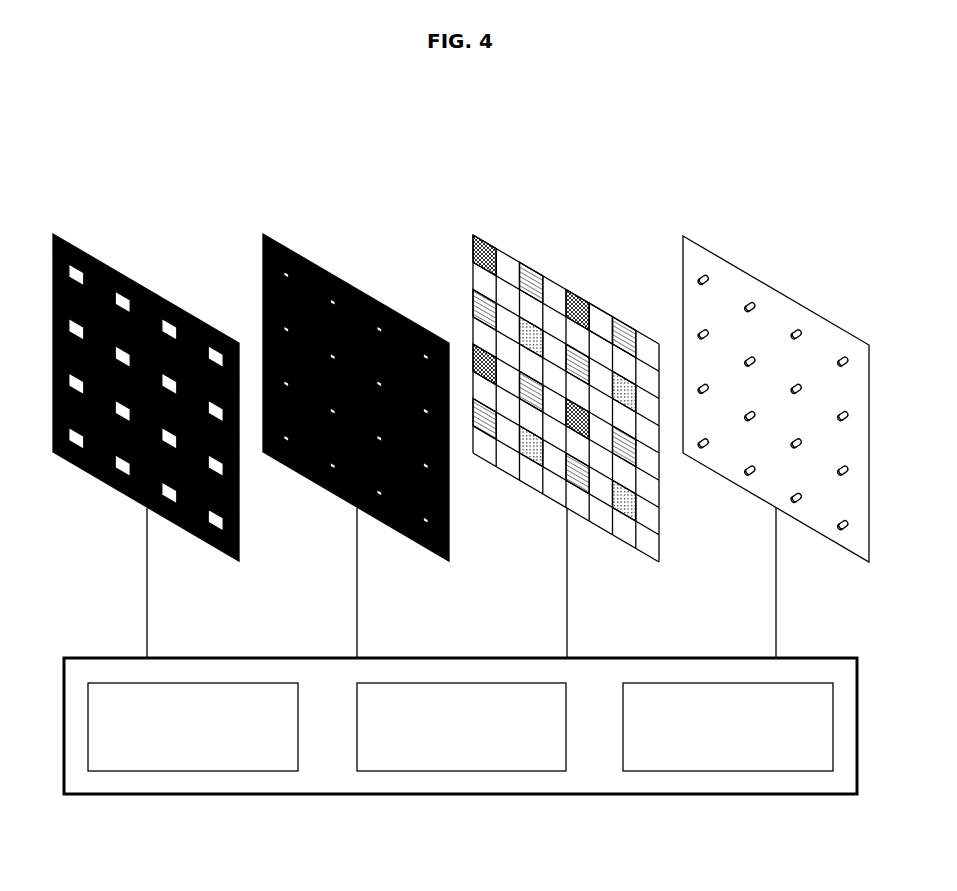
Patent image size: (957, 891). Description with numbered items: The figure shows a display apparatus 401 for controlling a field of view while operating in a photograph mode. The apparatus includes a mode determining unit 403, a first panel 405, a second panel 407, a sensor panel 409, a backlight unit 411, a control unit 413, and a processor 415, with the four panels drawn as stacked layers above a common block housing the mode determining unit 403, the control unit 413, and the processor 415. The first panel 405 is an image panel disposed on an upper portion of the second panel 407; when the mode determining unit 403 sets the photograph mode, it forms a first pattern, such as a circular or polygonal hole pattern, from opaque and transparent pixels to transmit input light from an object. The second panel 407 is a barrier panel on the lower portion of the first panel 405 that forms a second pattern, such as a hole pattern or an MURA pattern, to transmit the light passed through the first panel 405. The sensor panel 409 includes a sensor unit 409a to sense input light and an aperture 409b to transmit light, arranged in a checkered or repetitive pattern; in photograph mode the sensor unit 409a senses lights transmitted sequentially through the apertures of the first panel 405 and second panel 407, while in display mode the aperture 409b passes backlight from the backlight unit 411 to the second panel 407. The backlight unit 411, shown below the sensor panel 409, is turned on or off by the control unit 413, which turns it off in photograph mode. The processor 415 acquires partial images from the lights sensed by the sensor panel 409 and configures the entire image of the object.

The display apparatus 401 is at (432, 118).
The mode determining unit 403 is at (192, 772).
The first panel 405 is at (143, 288).
The second panel 407 is at (353, 288).
The sensor panel 409 is at (522, 366).
The sensor unit 409a is at (473, 240).
The aperture 409b is at (602, 318).
The backlight unit 411 is at (774, 289).
The control unit 413 is at (458, 772).
The processor 415 is at (728, 772).